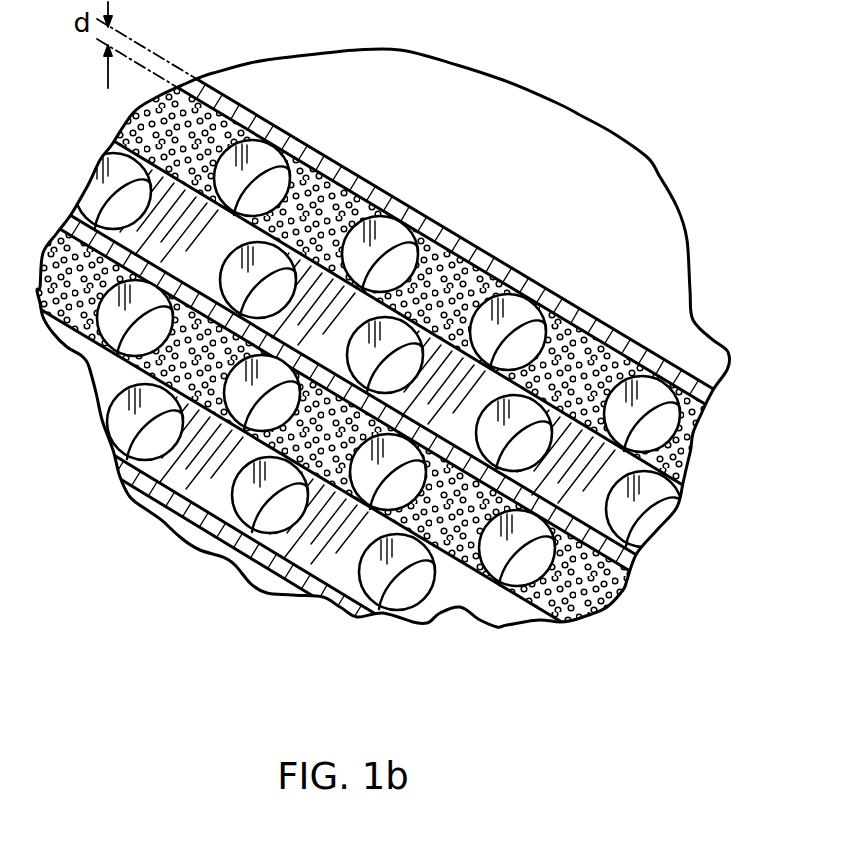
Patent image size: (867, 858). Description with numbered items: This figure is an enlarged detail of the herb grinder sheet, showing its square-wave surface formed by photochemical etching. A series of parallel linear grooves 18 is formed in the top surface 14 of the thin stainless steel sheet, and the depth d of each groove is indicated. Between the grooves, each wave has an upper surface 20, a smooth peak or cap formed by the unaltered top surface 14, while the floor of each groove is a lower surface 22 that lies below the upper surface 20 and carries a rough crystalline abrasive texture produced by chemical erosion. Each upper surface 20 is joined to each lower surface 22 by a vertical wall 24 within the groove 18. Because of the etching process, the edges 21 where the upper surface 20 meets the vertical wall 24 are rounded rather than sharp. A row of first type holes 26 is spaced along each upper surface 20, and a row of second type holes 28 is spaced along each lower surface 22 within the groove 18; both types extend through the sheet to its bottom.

The top surface 14 is at (507, 150).
The grooves 18 is at (190, 363).
The upper surface 20 is at (630, 465).
The edges 21 is at (103, 160).
The lower surface 22 is at (607, 357).
The vertical wall 24 is at (698, 387).
The first type hole 26 is at (273, 253).
The second type hole 28 is at (263, 157).